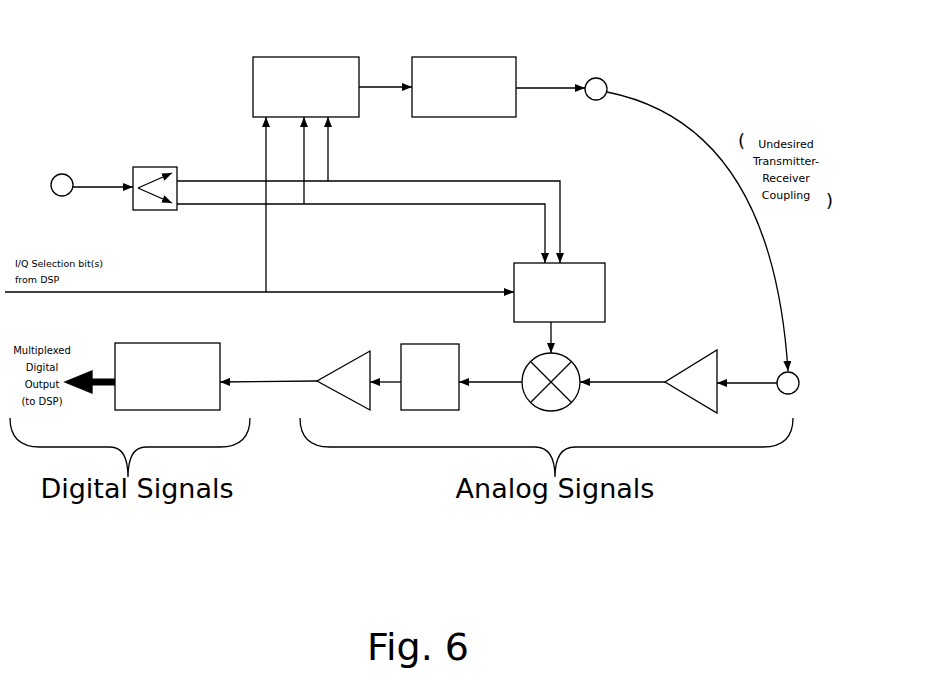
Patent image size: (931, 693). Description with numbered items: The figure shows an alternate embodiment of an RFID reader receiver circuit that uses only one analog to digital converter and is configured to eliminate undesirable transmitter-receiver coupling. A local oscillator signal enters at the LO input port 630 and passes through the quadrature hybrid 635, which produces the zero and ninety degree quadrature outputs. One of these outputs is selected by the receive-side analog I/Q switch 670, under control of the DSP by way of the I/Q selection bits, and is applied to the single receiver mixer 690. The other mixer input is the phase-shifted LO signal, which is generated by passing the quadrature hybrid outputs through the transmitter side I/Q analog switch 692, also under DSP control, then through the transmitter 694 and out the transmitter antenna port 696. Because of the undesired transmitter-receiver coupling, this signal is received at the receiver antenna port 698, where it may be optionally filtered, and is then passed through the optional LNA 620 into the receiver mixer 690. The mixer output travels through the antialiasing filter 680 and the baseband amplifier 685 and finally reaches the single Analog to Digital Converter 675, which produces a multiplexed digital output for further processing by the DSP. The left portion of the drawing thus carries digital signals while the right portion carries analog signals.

The LO input port 630 is at (62, 196).
The quadrature hybrid 635 is at (150, 210).
The transmitter side I/Q analog switch 692 is at (290, 57).
The transmitter 694 is at (450, 57).
The transmitter antenna port 696 is at (594, 100).
The receiver antenna port 698 is at (797, 392).
The LNA 620 is at (697, 400).
The receiver mixer 690 is at (551, 411).
The antialiasing filter 680 is at (430, 410).
The baseband amplifier 685 is at (337, 392).
The Analog to Digital Converter 675 is at (167, 343).
The analog I/Q switch 670 is at (588, 263).